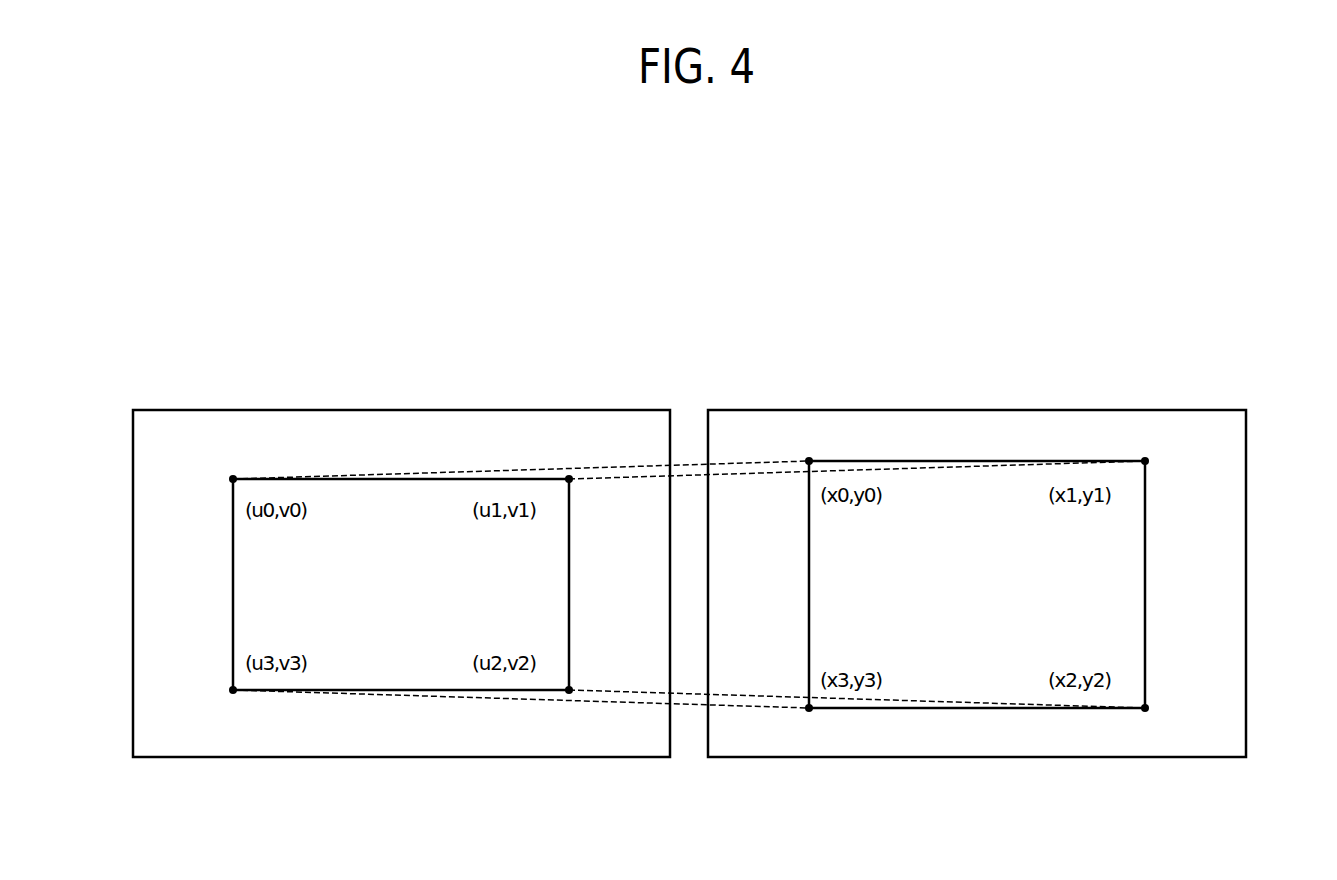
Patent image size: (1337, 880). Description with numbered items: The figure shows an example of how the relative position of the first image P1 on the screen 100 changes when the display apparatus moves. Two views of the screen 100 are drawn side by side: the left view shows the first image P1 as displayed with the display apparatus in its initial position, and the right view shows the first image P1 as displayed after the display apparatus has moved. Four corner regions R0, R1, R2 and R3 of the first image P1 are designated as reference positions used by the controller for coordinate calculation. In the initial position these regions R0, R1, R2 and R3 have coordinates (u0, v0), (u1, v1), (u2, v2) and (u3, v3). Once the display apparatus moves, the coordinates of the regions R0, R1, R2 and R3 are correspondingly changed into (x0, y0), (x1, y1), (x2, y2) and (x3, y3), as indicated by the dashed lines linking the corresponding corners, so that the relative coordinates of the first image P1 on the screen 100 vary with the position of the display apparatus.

The screen 100 is at (138, 433).
The first image P1 is at (233, 598).
The first corner region R0 is at (233, 479).
The second corner region R1 is at (569, 479).
The third corner region R2 is at (569, 690).
The fourth corner region R3 is at (233, 690).